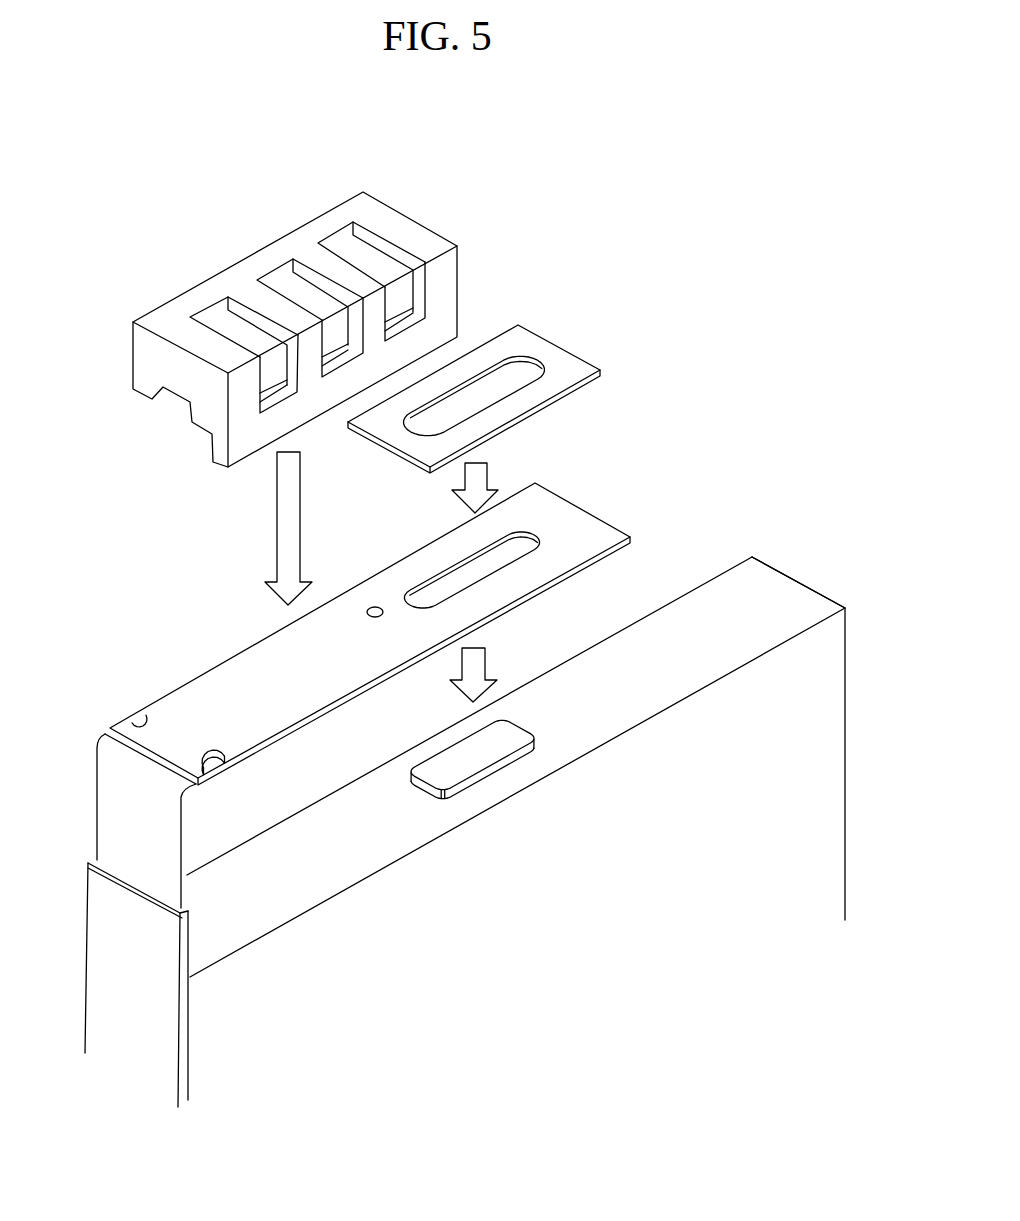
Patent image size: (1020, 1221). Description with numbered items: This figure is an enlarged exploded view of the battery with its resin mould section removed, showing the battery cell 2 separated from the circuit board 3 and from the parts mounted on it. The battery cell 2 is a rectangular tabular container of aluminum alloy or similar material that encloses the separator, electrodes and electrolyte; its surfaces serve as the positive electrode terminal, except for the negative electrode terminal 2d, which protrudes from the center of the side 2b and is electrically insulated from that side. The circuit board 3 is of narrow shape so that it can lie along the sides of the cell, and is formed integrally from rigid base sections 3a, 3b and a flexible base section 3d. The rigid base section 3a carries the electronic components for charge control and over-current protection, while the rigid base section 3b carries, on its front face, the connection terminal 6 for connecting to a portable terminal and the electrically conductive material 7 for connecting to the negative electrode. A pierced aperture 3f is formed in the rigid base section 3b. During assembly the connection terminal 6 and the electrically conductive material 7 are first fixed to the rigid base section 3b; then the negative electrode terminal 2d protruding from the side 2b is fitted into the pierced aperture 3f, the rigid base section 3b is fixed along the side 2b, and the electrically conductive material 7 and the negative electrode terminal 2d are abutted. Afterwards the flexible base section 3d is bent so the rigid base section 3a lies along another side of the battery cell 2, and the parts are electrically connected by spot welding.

The battery cell 2 is at (825, 692).
The side 2b is at (777, 598).
The negative electrode terminal 2d is at (508, 733).
The circuit board 3 is at (147, 683).
The rigid base section 3a is at (170, 1020).
The rigid base section 3b is at (597, 525).
The flexible base section 3d is at (190, 837).
The pierced aperture 3f is at (518, 547).
The connection terminal 6 is at (258, 262).
The electrically conductive material 7 is at (552, 355).